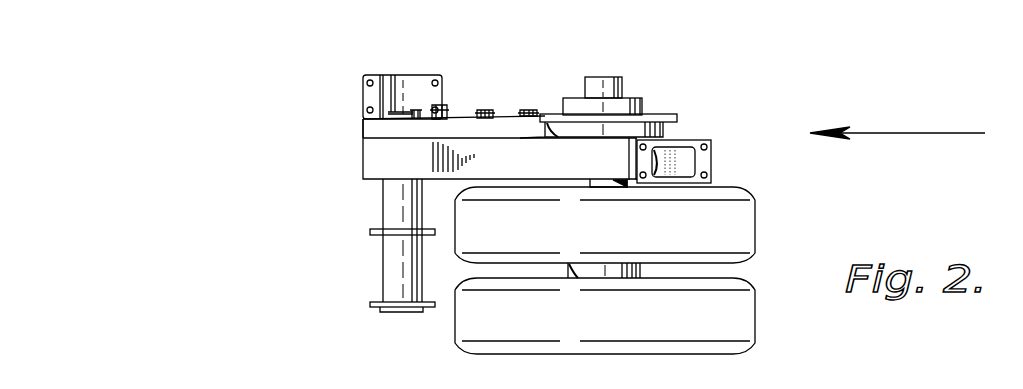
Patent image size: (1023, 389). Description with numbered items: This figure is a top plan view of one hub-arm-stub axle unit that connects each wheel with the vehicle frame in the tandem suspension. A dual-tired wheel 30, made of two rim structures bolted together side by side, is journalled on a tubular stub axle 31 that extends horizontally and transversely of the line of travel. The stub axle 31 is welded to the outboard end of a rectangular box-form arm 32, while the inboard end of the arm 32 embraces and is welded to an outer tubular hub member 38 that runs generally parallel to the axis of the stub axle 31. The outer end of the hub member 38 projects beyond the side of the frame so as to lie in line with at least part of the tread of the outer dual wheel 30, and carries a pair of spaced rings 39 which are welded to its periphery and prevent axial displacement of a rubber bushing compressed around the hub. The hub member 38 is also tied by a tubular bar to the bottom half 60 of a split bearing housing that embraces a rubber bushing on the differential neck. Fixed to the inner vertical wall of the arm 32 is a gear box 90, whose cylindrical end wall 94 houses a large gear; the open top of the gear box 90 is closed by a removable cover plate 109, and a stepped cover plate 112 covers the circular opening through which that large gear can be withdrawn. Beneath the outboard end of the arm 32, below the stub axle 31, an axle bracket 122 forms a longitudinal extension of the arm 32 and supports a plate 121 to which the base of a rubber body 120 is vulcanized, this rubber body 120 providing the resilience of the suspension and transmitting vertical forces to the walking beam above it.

The wheels 30 is at (768, 258).
The stub axle 31 is at (597, 190).
The arm 32 is at (502, 155).
The outer tubular hub member 38 is at (395, 198).
The rings 39 is at (370, 232).
The bottom half bearing housing 60 is at (410, 84).
The gear box 90 is at (459, 119).
The end wall 94 is at (667, 130).
The cover plate 109 is at (373, 128).
The cover plate 112 is at (627, 102).
The rubber body 120 is at (690, 162).
The plate 121 is at (703, 155).
The axle bracket 122 is at (633, 158).